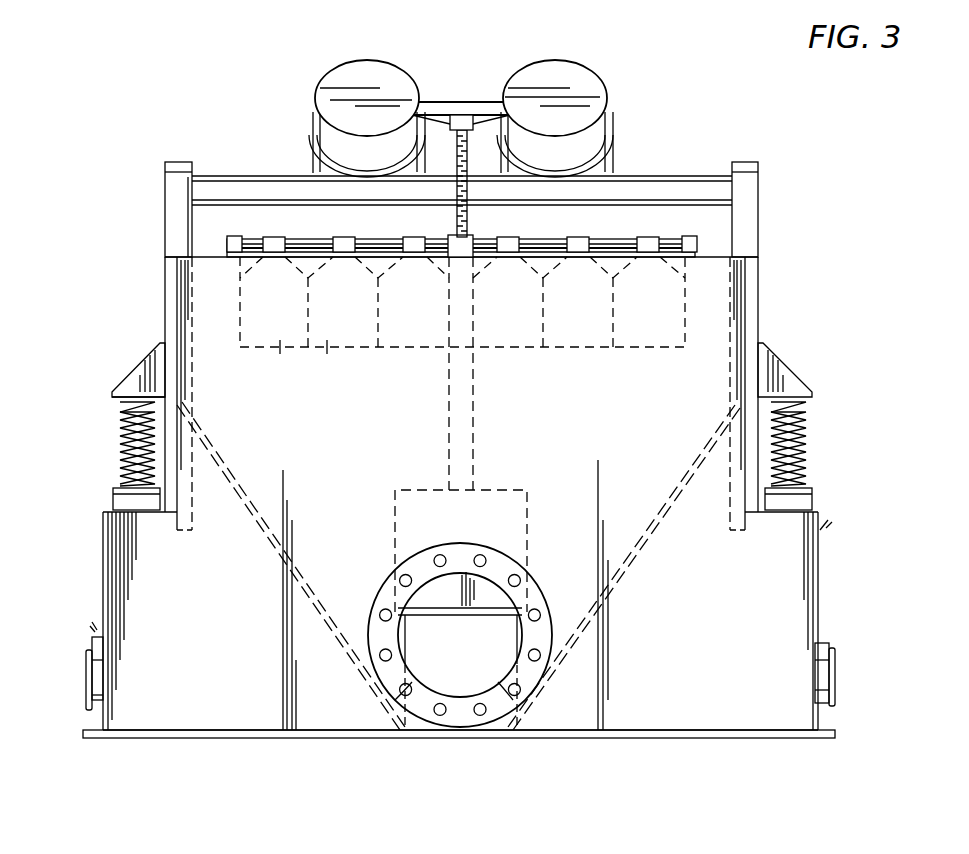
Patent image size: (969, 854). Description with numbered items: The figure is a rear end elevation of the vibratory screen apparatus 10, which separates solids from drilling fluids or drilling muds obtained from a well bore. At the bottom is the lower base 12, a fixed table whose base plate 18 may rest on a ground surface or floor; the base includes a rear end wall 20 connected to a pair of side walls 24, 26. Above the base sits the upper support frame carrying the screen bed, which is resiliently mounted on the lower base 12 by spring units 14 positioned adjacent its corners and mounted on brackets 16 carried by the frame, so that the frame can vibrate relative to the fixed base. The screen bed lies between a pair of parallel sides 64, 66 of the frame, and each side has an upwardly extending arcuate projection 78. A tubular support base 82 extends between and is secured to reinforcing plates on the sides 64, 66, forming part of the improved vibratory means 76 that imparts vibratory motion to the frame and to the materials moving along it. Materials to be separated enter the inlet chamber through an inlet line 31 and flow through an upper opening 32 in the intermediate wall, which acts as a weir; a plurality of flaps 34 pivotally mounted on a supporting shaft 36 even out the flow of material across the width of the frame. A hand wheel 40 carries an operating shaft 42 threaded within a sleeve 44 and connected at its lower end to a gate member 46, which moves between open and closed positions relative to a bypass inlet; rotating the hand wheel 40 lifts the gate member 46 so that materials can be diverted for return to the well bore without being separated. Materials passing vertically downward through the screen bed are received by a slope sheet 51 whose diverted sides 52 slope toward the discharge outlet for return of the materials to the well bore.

The vibratory screen apparatus 10 is at (814, 236).
The lower base 12 is at (122, 566).
The spring units 14 is at (125, 445).
The brackets 16 is at (134, 376).
The base plate 18 is at (692, 738).
The rear end wall 20 is at (195, 668).
The side wall 24 is at (825, 556).
The side wall 26 is at (105, 530).
The inlet line 31 is at (535, 596).
The upper opening 32 is at (655, 345).
The flaps 34 is at (326, 352).
The supporting shaft 36 is at (305, 240).
The hand wheel 40 is at (459, 102).
The operating shaft 42 is at (470, 213).
The sleeve 44 is at (476, 427).
The gate member 46 is at (470, 655).
The slope sheet 51 is at (312, 578).
The diverted sides 52 is at (258, 526).
The side 64 is at (165, 290).
The side 66 is at (758, 318).
The vibratory means 76 is at (506, 44).
The arcuate projection 78 is at (758, 190).
The tubular support base 82 is at (660, 178).